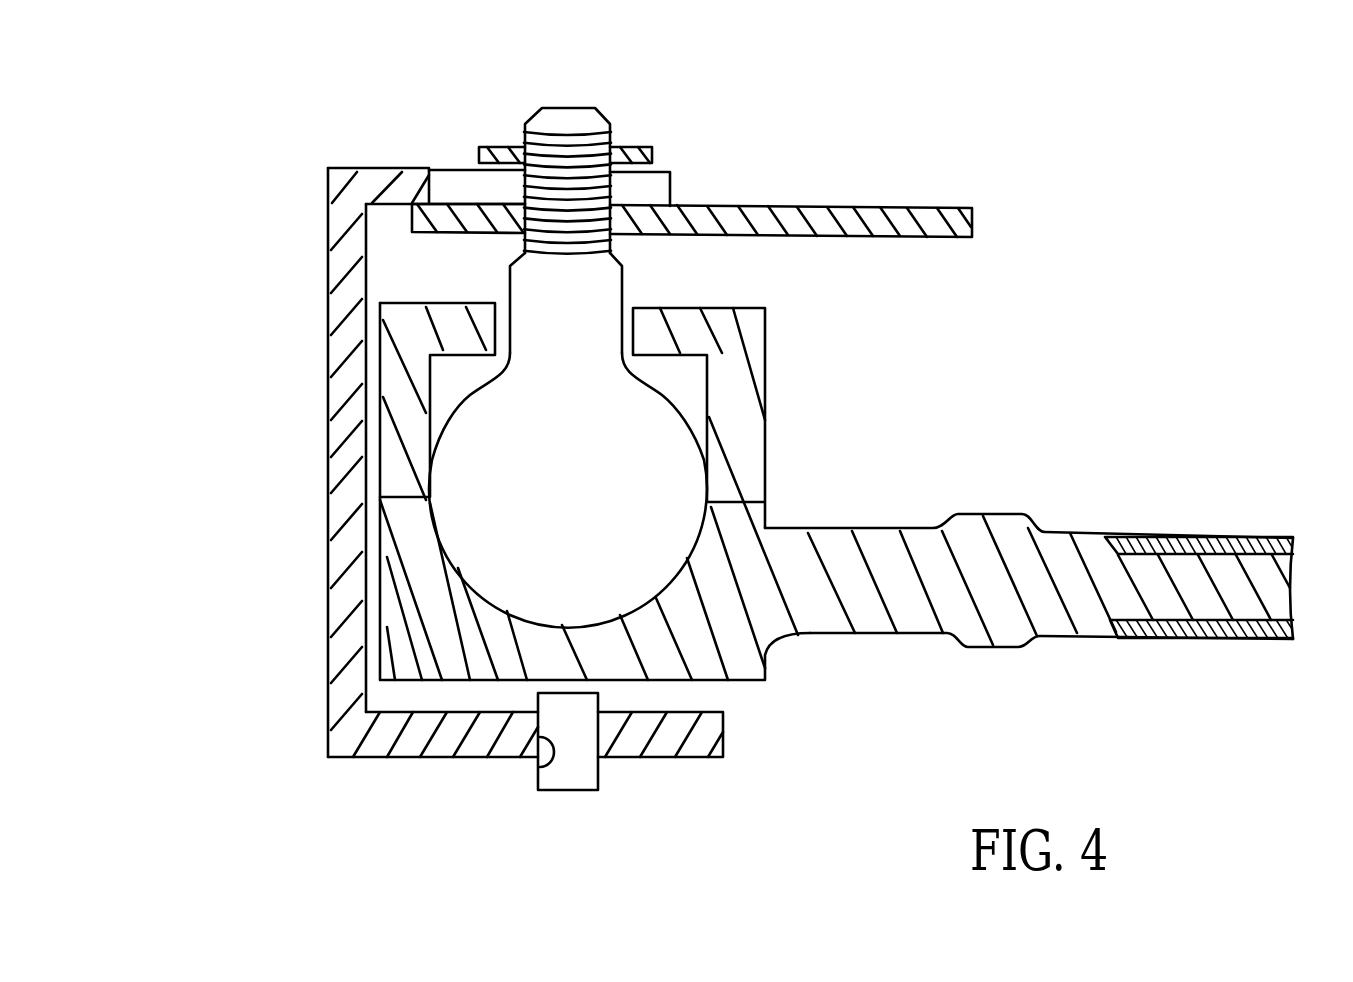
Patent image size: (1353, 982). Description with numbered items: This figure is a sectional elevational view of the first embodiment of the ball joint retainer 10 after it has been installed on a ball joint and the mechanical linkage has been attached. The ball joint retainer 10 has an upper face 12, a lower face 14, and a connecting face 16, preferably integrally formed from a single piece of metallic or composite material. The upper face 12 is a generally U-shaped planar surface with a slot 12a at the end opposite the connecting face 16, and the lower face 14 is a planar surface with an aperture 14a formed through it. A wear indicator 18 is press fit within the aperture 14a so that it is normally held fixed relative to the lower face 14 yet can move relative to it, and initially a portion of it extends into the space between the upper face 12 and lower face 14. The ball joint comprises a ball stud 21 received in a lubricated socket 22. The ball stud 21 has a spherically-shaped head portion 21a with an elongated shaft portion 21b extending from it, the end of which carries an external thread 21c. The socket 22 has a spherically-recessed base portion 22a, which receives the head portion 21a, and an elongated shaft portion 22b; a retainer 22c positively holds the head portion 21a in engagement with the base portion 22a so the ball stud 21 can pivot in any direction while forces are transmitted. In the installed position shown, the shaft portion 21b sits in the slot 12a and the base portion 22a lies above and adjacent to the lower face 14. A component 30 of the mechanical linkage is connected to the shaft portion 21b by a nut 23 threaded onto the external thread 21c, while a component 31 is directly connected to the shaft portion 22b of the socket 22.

The ball joint retainer 10 is at (292, 150).
The upper face 12 is at (403, 185).
The slot 12a is at (647, 187).
The lower face 14 is at (690, 740).
The aperture 14a is at (535, 770).
The connecting face 16 is at (354, 370).
The wear indicator 18 is at (568, 770).
The ball stud 21 is at (672, 267).
The spherically-shaped head portion 21a is at (488, 483).
The elongated shaft portion 21b is at (535, 272).
The external thread 21c is at (565, 150).
The socket 22 is at (868, 687).
The spherically-recessed base portion 22a is at (495, 600).
The elongated shaft portion 22b is at (1043, 607).
The retainer 22c is at (750, 372).
The nut 23 is at (640, 148).
The component 30 is at (927, 212).
The component 31 is at (1237, 545).